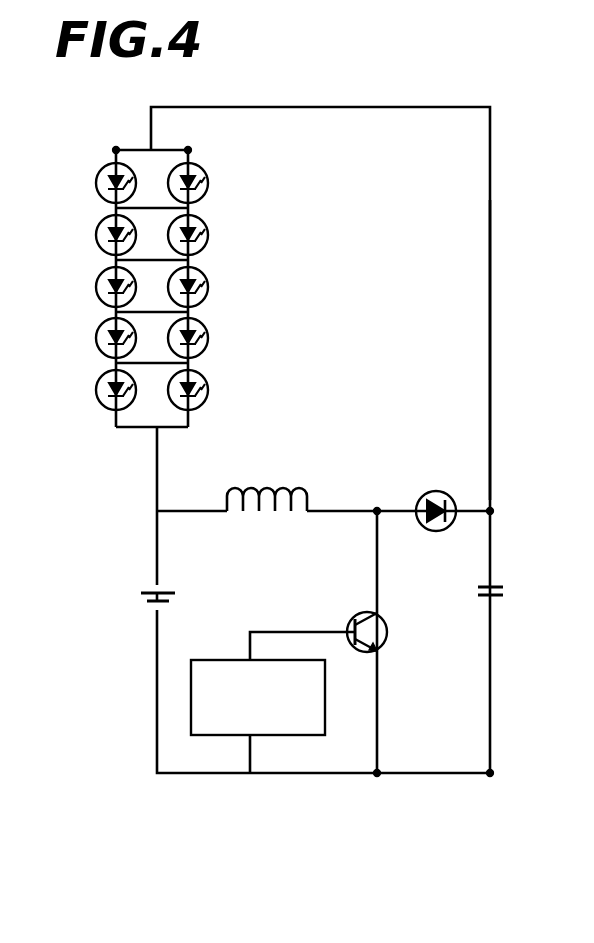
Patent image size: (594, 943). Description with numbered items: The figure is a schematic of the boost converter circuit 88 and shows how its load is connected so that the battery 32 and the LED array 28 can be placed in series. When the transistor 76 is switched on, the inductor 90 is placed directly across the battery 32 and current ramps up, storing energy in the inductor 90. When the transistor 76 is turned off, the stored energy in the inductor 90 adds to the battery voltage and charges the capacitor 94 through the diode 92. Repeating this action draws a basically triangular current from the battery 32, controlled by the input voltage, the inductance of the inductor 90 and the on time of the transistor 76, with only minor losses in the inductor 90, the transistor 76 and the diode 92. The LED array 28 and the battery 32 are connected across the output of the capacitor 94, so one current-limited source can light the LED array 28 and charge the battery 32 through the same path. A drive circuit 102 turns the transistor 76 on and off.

The LED array 28 is at (221, 238).
The boost converter circuit 88 is at (505, 370).
The inductor 90 is at (266, 478).
The diode 92 is at (434, 490).
The capacitor 94 is at (507, 580).
The battery 32 is at (172, 586).
The transistor 76 is at (388, 614).
The drive circuit 102 is at (293, 736).